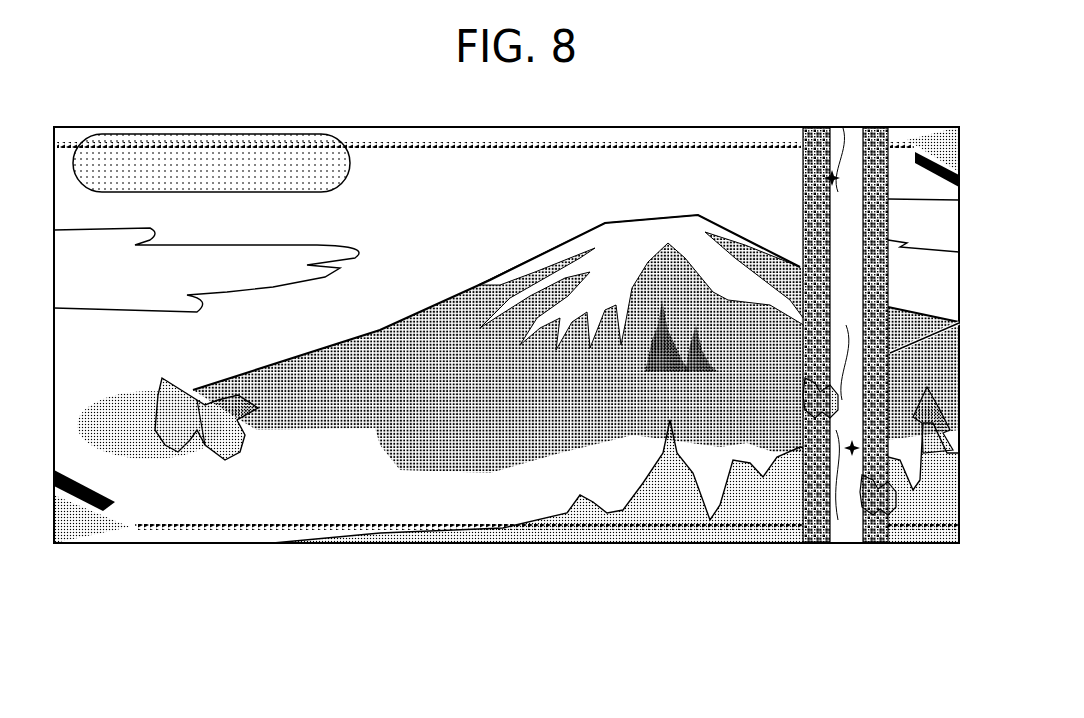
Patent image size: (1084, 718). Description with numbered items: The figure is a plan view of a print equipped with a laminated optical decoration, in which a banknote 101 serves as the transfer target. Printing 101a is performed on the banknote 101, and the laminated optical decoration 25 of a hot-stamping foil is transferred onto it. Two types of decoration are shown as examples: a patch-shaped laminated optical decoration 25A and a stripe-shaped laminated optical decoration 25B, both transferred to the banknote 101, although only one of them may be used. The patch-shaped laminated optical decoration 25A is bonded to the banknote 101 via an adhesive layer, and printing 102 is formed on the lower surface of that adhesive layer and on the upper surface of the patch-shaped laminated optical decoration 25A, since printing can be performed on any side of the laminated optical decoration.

The banknote 101 is at (388, 170).
The printing 101a is at (618, 220).
The laminated optical decoration 25 is at (483, 332).
The patch-shaped laminated optical decoration 25A is at (153, 452).
The stripe-shaped laminated optical decoration 25B is at (834, 180).
The printing 102 is at (215, 447).